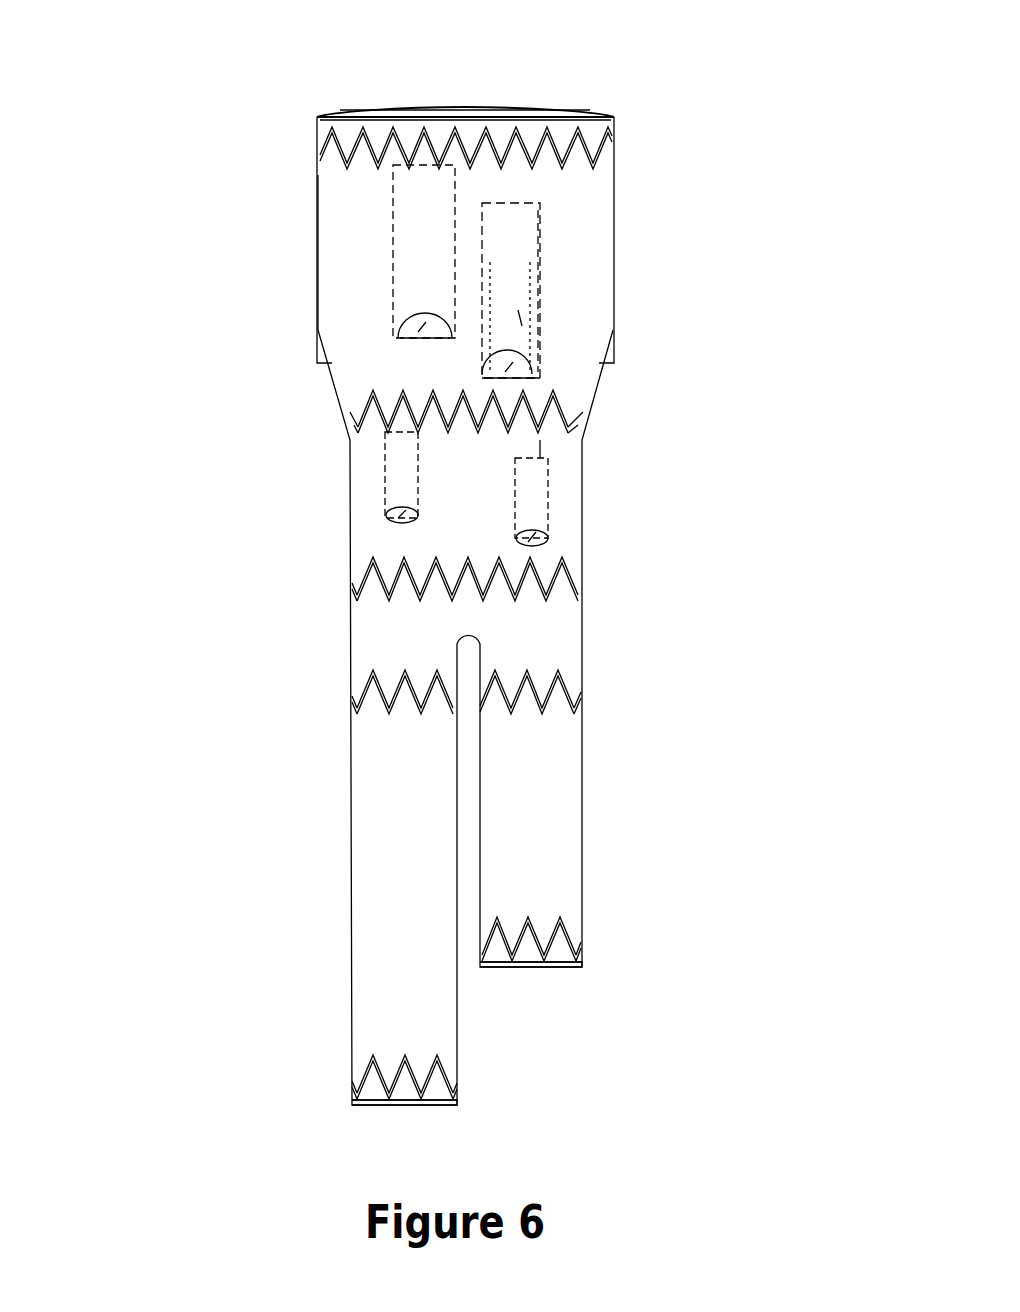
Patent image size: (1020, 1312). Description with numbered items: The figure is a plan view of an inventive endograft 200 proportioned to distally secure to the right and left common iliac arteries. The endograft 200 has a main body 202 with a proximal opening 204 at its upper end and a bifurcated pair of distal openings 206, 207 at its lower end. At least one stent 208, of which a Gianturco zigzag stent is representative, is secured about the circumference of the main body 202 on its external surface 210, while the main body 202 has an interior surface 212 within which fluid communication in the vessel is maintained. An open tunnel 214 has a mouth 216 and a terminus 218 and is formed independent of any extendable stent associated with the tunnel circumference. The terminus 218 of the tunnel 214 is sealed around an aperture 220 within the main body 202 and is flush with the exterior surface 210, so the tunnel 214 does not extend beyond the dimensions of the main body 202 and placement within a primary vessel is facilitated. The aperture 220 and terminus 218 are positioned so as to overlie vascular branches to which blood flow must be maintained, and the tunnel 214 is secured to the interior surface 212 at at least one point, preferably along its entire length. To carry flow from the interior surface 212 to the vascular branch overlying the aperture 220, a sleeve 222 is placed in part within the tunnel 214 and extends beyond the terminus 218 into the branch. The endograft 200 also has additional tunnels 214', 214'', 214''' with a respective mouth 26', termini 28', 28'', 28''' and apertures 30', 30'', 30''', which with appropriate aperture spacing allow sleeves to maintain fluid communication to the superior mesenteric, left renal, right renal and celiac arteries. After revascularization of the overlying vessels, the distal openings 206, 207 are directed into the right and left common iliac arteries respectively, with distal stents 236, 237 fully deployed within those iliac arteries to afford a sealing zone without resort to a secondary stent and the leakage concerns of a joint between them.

The endograft 200 is at (232, 436).
The main body 202 is at (613, 297).
The proximal opening 204 is at (546, 115).
The distal opening 206 is at (405, 1106).
The distal opening 207 is at (530, 968).
The stent 208 is at (317, 153).
The external surface 210 is at (332, 182).
The interior surface 212 is at (428, 116).
The open tunnel 214 is at (600, 291).
The additional tunnel 214' is at (604, 498).
The additional tunnel 214'' is at (335, 475).
The additional tunnel 214''' is at (324, 251).
The mouth 216 is at (540, 211).
The terminus 218 is at (515, 366).
The aperture 220 is at (515, 378).
The sleeve 222 is at (518, 318).
The distal stent 236 is at (382, 1072).
The distal stent 237 is at (540, 930).
The mouth 26' is at (611, 439).
The terminus 28' is at (596, 565).
The terminus 28'' is at (336, 514).
The terminus 28''' is at (327, 299).
The aperture 30' is at (608, 542).
The aperture 30'' is at (337, 541).
The aperture 30''' is at (327, 329).